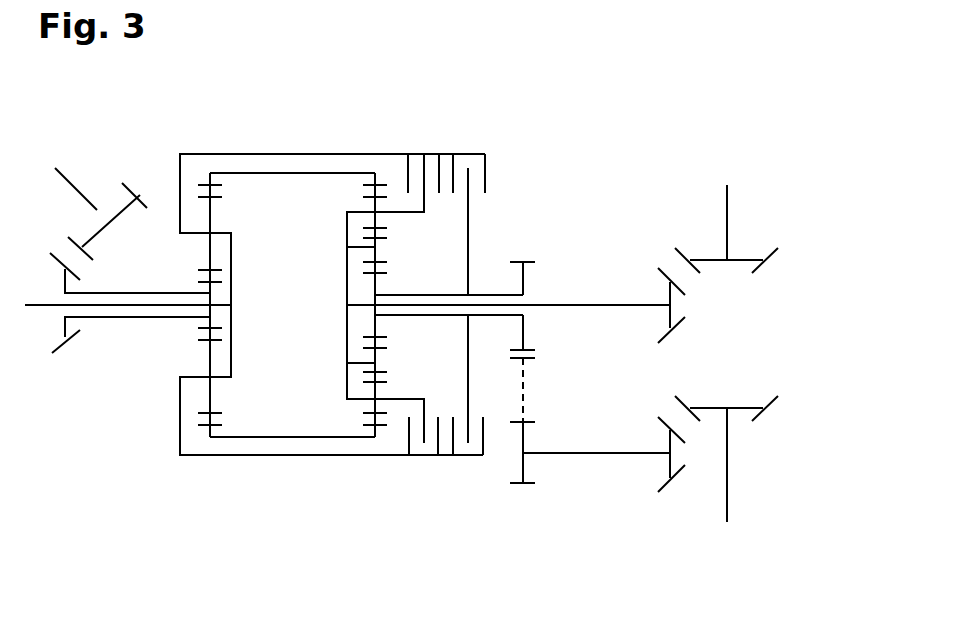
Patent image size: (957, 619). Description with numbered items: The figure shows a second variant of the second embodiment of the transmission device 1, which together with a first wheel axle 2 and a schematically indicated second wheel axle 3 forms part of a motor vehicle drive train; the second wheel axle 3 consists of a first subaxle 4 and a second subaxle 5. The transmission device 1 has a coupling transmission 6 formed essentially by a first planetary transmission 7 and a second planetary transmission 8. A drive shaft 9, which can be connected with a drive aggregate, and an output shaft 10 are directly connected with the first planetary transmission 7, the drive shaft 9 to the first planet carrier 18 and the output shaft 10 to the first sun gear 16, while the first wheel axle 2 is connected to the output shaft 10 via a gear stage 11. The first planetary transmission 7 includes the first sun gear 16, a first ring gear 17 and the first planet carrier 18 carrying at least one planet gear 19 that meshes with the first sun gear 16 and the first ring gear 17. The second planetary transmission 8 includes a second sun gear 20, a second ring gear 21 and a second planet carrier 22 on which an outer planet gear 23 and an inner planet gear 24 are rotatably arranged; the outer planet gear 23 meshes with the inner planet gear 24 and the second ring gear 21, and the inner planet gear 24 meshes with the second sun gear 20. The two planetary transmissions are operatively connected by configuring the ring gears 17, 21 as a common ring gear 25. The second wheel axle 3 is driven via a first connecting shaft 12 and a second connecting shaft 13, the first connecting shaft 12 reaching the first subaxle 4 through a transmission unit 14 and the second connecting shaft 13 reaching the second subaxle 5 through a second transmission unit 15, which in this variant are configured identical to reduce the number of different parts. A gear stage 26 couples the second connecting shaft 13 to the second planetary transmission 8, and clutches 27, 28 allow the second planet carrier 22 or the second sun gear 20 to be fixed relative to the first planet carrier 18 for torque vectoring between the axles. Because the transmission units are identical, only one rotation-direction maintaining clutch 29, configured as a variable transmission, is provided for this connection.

The transmission device 1 is at (328, 120).
The first wheel axle 2 is at (70, 148).
The second wheel axle 3 is at (752, 186).
The first subaxle 4 is at (727, 222).
The second subaxle 5 is at (727, 473).
The coupling transmission 6 is at (403, 130).
The first planetary transmission 7 is at (210, 461).
The second planetary transmission 8 is at (385, 461).
The drive shaft 9 is at (40, 305).
The output shaft 10 is at (105, 318).
The gear stage 11 is at (100, 187).
The first connecting shaft 12 is at (627, 305).
The second connecting shaft 13 is at (607, 453).
The transmission unit 14 is at (700, 290).
The second transmission unit 15 is at (700, 395).
The first sun gear 16 is at (205, 322).
The first ring gear 17 is at (228, 173).
The first planet carrier 18 is at (231, 338).
The planet gear 19 is at (210, 213).
The second sun gear 20 is at (375, 282).
The second ring gear 21 is at (355, 173).
The second planet carrier 22 is at (347, 247).
The outer planet gear 23 is at (375, 211).
The inner planet gear 24 is at (375, 250).
The common ring gear 25 is at (298, 173).
The gear stage 26 is at (540, 423).
The clutch 27 is at (423, 151).
The clutch 28 is at (469, 151).
The rotation-direction maintaining clutch 29 is at (540, 387).